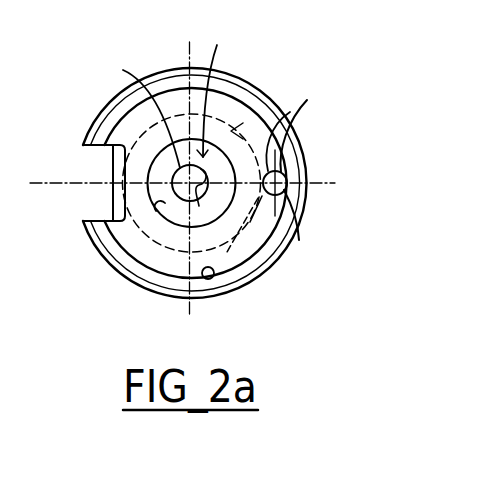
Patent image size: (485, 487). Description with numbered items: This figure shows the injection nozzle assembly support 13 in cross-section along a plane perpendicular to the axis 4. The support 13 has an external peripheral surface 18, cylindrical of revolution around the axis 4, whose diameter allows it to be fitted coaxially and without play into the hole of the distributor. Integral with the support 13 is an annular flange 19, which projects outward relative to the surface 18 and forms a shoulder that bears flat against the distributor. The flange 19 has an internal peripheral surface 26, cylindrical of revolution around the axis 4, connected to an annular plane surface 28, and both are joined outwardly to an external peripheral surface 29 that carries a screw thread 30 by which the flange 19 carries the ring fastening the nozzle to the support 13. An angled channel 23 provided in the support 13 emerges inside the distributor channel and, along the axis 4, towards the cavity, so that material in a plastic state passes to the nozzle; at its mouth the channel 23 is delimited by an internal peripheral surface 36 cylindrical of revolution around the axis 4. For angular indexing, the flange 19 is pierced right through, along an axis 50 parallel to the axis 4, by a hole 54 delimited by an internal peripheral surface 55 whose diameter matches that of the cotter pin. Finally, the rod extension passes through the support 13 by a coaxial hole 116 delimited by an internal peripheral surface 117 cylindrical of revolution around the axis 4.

The assembly support 13 is at (124, 278).
The coaxial hole 116 is at (129, 105).
The angled channel 23 is at (228, 81).
The external peripheral surface 18 is at (251, 92).
The internal peripheral surface 55 is at (302, 120).
The axis 50 is at (307, 140).
The hole 54 is at (312, 203).
The external peripheral surface 29 is at (308, 223).
The screw thread 30 is at (290, 242).
The flange 19 is at (243, 263).
The annular plane surface 28 is at (230, 278).
The internal peripheral surface 26 is at (208, 280).
The internal peripheral surface 36 is at (162, 212).
The axis 4 is at (196, 178).
The internal peripheral surface 117 is at (215, 174).